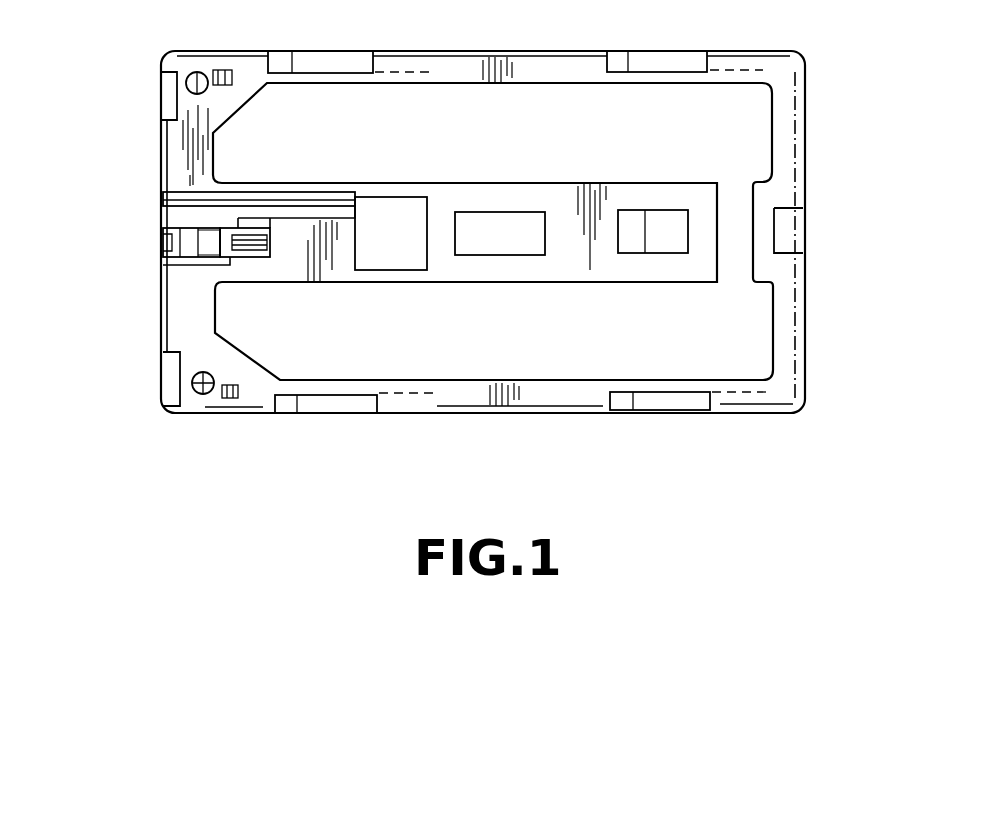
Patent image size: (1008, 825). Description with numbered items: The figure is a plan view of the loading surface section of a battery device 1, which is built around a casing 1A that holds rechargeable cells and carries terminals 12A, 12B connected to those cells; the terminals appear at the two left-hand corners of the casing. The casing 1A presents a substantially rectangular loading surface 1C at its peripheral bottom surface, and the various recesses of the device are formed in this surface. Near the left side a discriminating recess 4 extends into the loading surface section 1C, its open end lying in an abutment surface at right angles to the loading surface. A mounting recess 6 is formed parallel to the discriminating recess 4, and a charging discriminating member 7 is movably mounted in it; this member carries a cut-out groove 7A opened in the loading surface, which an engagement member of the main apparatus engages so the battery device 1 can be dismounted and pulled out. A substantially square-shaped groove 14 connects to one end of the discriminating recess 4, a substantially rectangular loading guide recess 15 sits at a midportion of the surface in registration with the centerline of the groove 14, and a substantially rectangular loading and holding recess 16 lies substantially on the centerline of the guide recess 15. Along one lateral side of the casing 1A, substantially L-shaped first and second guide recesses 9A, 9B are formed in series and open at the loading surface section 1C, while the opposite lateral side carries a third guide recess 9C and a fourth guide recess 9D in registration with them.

The battery device 1 is at (840, 160).
The casing 1A is at (797, 50).
The loading surface section 1C is at (747, 333).
The terminal 12A is at (160, 83).
The terminal 12B is at (175, 379).
The first guide recess 9A is at (328, 405).
The second guide recess 9B is at (657, 400).
The third guide recess 9C is at (338, 62).
The fourth guide recess 9D is at (667, 62).
The discriminating recess 4 is at (186, 210).
The mounting recess 6 is at (165, 237).
The charging discriminating member 7 is at (188, 248).
The cut-out groove 7A is at (210, 248).
The substantially square-shaped groove 14 is at (393, 242).
The loading guide recess 15 is at (509, 235).
The loading and holding recess 16 is at (660, 238).